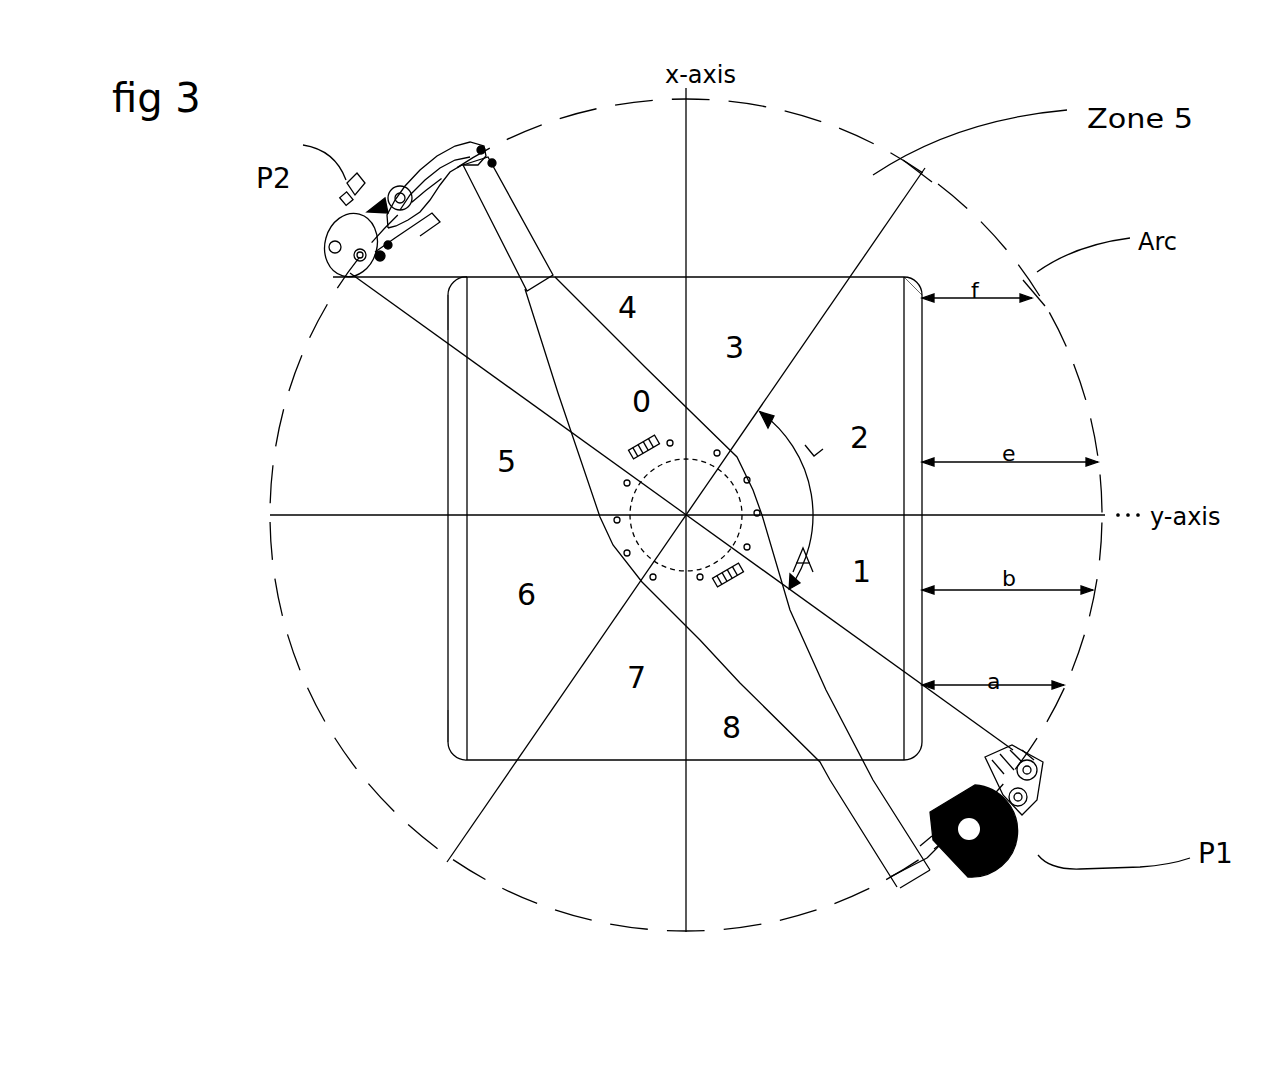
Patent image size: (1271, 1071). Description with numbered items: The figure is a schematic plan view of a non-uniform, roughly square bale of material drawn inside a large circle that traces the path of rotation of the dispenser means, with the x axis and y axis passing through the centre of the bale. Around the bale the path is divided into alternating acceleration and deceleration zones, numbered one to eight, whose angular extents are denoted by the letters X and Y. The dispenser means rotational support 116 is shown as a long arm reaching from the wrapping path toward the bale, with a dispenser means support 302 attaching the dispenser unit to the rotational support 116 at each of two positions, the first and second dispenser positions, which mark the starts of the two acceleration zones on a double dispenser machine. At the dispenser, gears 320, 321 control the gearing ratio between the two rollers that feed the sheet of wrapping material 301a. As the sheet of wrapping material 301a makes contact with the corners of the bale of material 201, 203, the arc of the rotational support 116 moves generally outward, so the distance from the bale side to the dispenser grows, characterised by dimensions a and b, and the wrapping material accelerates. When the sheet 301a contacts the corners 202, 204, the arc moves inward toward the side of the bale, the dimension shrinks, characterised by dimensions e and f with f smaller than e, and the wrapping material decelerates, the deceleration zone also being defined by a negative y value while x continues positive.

The dispenser means rotational support 116 is at (853, 808).
The corner of the bale of material 201 is at (634, 533).
The corner of the bale of material 202 is at (920, 275).
The corner of the bale of material 203 is at (294, 350).
The corner of the bale of material 204 is at (348, 781).
The sheet of wrapping material 301a is at (1105, 716).
The dispenser means support 302 is at (1020, 832).
The gear 320 is at (1038, 770).
The gear 321 is at (1028, 802).